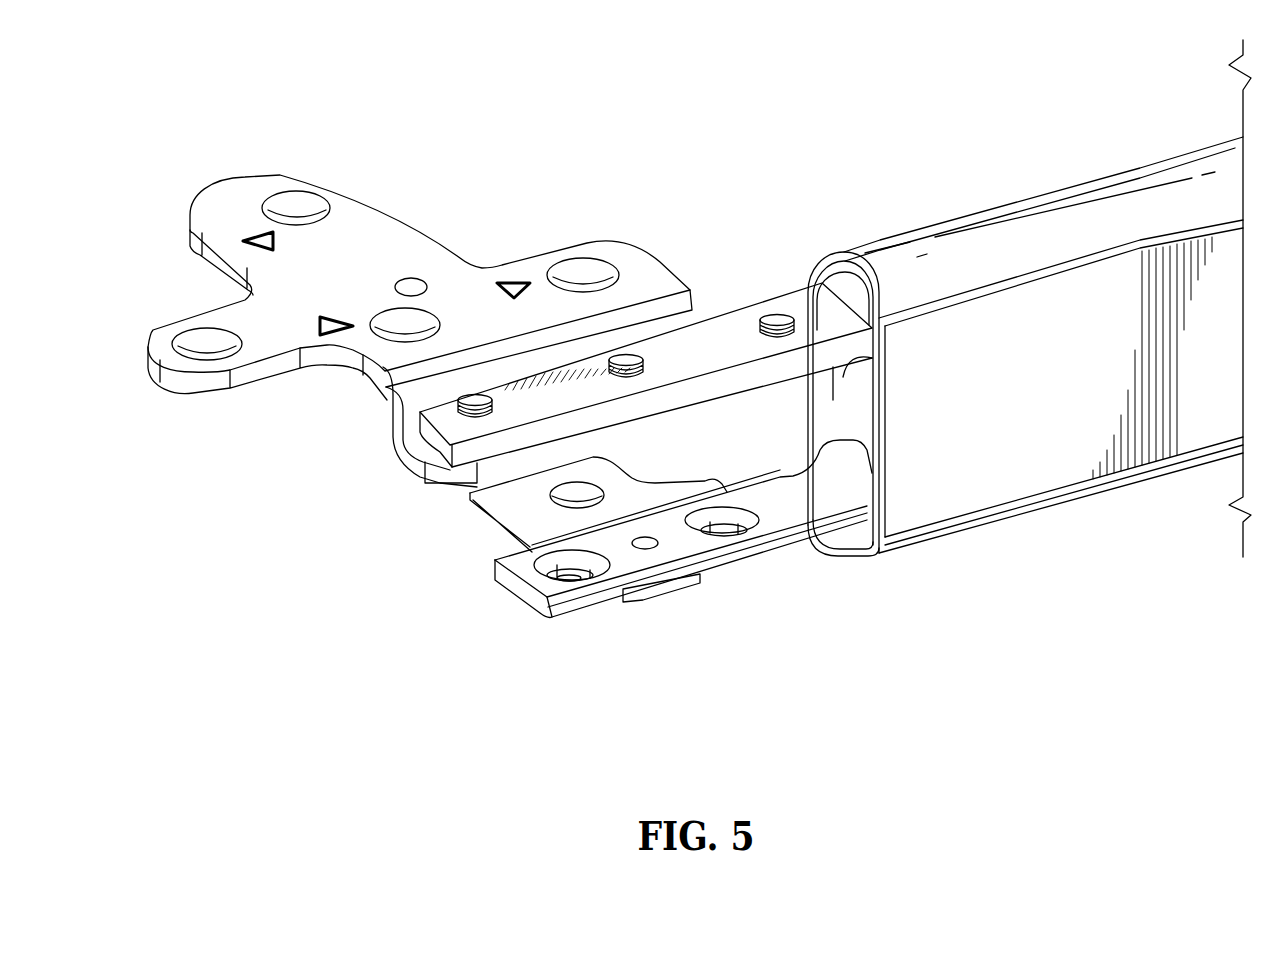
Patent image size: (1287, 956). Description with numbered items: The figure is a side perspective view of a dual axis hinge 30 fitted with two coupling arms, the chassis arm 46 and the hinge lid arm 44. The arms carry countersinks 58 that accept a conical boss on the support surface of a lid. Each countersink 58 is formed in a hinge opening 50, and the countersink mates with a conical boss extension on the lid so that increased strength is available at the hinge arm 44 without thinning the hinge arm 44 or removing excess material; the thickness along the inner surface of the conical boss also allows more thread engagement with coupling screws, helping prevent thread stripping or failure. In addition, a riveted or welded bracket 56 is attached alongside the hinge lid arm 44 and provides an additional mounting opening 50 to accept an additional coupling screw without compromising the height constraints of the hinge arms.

The dual axis hinge 30 is at (983, 432).
The coupling arm 46 is at (738, 325).
The bracket 56 is at (476, 527).
The countersink 58 is at (537, 558).
The hinge opening 50 is at (605, 560).
The hinge arm 44 is at (780, 523).